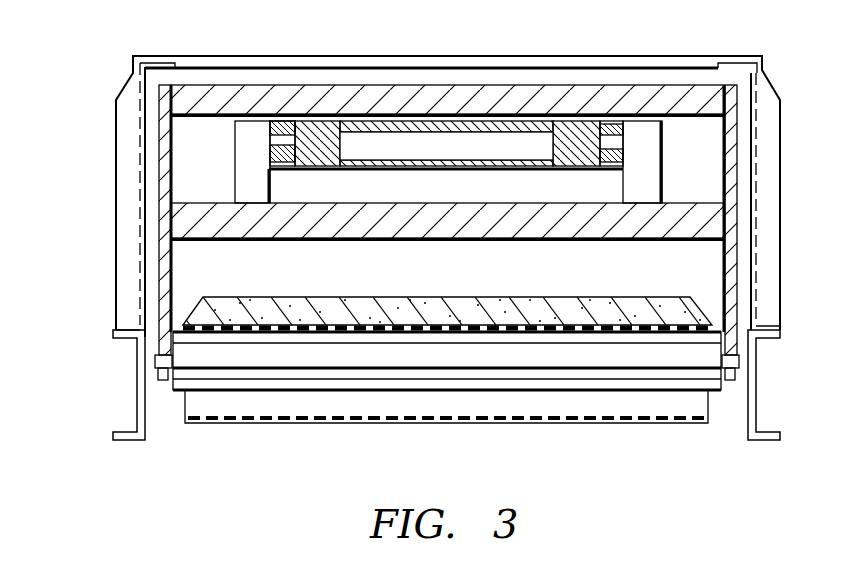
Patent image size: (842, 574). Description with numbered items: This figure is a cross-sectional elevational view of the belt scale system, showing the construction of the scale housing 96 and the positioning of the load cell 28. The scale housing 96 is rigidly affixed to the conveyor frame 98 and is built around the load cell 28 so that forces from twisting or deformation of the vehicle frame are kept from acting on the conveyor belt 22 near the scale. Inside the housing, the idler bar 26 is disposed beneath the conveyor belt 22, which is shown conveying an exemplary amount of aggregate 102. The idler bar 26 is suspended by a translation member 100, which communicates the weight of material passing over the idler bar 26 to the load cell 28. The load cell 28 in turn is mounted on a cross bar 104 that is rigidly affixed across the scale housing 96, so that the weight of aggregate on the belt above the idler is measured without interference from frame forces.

The scale housing 96 is at (508, 57).
The conveyor frame 98 is at (135, 377).
The translation member 100 is at (285, 90).
The cross bar 104 is at (428, 232).
The load cell 28 is at (246, 153).
The aggregate 102 is at (303, 305).
The conveyor belt 22 is at (556, 323).
The idler bar 26 is at (426, 376).